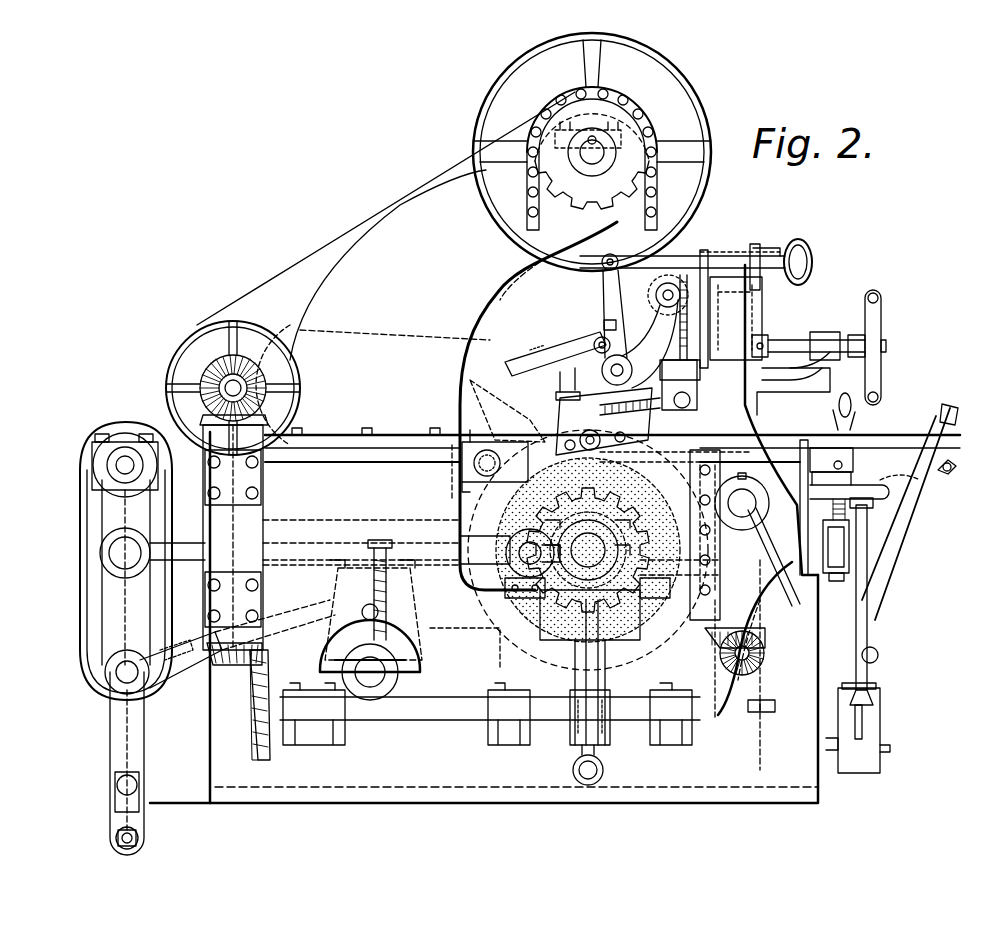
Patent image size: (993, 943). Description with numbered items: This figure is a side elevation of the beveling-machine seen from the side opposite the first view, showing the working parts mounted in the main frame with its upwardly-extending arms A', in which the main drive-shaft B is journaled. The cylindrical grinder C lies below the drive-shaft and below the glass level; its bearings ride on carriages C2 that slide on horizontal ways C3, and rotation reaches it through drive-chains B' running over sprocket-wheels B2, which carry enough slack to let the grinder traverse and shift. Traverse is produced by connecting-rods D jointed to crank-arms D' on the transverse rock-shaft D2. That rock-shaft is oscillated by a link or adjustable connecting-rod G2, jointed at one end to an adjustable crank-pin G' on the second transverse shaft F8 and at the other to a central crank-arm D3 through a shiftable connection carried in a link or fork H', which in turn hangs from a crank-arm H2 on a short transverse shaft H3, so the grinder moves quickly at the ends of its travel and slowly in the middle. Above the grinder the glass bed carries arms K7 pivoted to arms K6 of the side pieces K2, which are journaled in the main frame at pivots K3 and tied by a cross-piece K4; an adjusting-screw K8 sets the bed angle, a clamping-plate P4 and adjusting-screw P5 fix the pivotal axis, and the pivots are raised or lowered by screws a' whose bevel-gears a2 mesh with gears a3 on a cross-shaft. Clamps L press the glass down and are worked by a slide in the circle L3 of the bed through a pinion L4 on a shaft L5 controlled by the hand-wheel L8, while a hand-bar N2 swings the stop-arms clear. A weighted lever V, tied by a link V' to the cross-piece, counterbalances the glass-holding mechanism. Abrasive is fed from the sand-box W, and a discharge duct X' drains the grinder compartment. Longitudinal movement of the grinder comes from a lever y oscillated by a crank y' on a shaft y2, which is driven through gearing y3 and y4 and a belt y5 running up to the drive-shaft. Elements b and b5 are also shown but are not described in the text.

The main drive-shaft B is at (592, 152).
The drive-chains B' is at (639, 158).
The sprocket-wheels B2 is at (588, 363).
The upwardly-extending arms A' is at (436, 380).
The belt y5 is at (372, 188).
The gearing y4 is at (218, 354).
The gearing y3 is at (238, 668).
The transverse rock-shaft D2 is at (122, 468).
The central crank-arm D3 is at (82, 630).
The crank-arms D' is at (125, 572).
The connecting-rods D is at (330, 539).
The link or fork H' is at (108, 752).
The short transverse shaft H3 is at (114, 786).
The crank-arm H2 is at (112, 834).
The link or adjustable connecting-rod G2 is at (190, 655).
The adjustable crank-pin G' is at (361, 600).
The second transverse shaft F8 is at (382, 676).
The shaft y2 is at (405, 720).
The lever y is at (590, 667).
The crank y' is at (599, 717).
The outlet or discharge duct X' is at (602, 765).
The grinder C is at (512, 500).
The carriages C2 is at (534, 578).
The ways C3 is at (508, 585).
The sand-box W is at (525, 420).
The clamping-plate P4 is at (562, 398).
The adjusting-screw P5 is at (540, 355).
The arms K7 is at (568, 390).
The lever b is at (600, 392).
The block b5 is at (668, 364).
The shaft L5 is at (620, 322).
The pinion L4 is at (655, 297).
The circle of the bed L3 is at (742, 322).
The clamps L is at (760, 405).
The hand-wheel L8 is at (884, 318).
The hand-bar N2 is at (812, 252).
The arms K6 is at (690, 462).
The side pieces K2 is at (750, 512).
The adjusting-screw K8 is at (890, 494).
The cross-piece K4 is at (852, 565).
The pivots K3 is at (794, 606).
The link V' is at (889, 601).
The weighted lever V is at (870, 728).
The screws a' is at (726, 641).
The bevel-gears a2 is at (766, 642).
The gears a3 is at (742, 675).